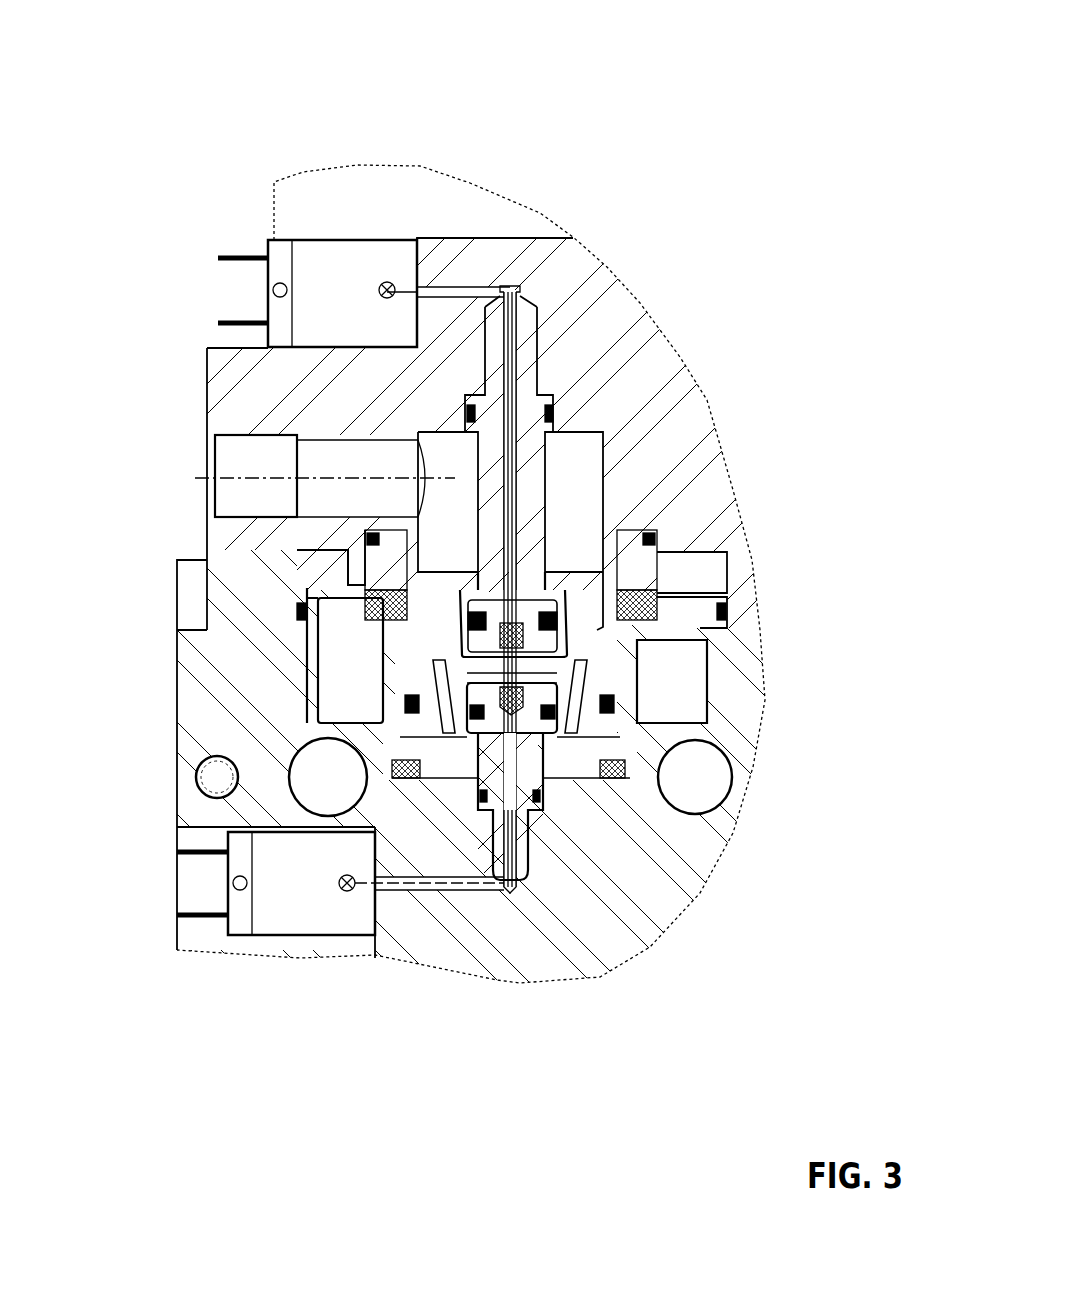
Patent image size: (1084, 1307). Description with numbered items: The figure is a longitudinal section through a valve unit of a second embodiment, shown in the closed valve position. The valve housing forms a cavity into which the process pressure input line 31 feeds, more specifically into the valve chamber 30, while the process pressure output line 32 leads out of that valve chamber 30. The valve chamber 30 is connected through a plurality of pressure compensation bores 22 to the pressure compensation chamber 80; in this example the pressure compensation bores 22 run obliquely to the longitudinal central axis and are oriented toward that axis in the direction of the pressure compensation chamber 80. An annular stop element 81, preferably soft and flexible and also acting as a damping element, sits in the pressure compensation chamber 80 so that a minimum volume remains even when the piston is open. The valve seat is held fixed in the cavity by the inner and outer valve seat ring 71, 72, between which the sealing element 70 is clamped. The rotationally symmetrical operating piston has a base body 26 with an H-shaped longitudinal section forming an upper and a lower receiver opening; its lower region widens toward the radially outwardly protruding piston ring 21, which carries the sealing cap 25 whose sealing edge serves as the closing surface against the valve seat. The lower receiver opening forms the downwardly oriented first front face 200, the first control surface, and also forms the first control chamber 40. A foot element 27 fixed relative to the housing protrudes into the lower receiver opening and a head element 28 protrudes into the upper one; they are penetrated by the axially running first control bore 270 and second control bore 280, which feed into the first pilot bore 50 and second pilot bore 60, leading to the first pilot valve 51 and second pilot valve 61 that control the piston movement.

The first pilot bore 50 is at (463, 880).
The first pilot valve 51 is at (275, 920).
The second pilot bore 60 is at (467, 290).
The second pilot valve 61 is at (347, 283).
The second control bore 280 is at (513, 367).
The head element 28 is at (557, 432).
The valve chamber 30 is at (592, 502).
The process pressure output line 32 is at (247, 462).
The inner valve seat ring 71 is at (362, 535).
The outer valve seat ring 72 is at (400, 597).
The sealing element 70 is at (350, 583).
The sealing cap 25 is at (455, 630).
The first control chamber 40 is at (343, 698).
The piston ring 21 is at (345, 788).
The pressure compensation bores 22 is at (448, 717).
The base body 26 is at (575, 662).
The first front face 200 is at (565, 712).
The process pressure input line 31 is at (703, 763).
The stop element 81 is at (640, 812).
The foot element 27 is at (532, 767).
The first control bore 270 is at (510, 847).
The pressure compensation chamber 80 is at (428, 770).